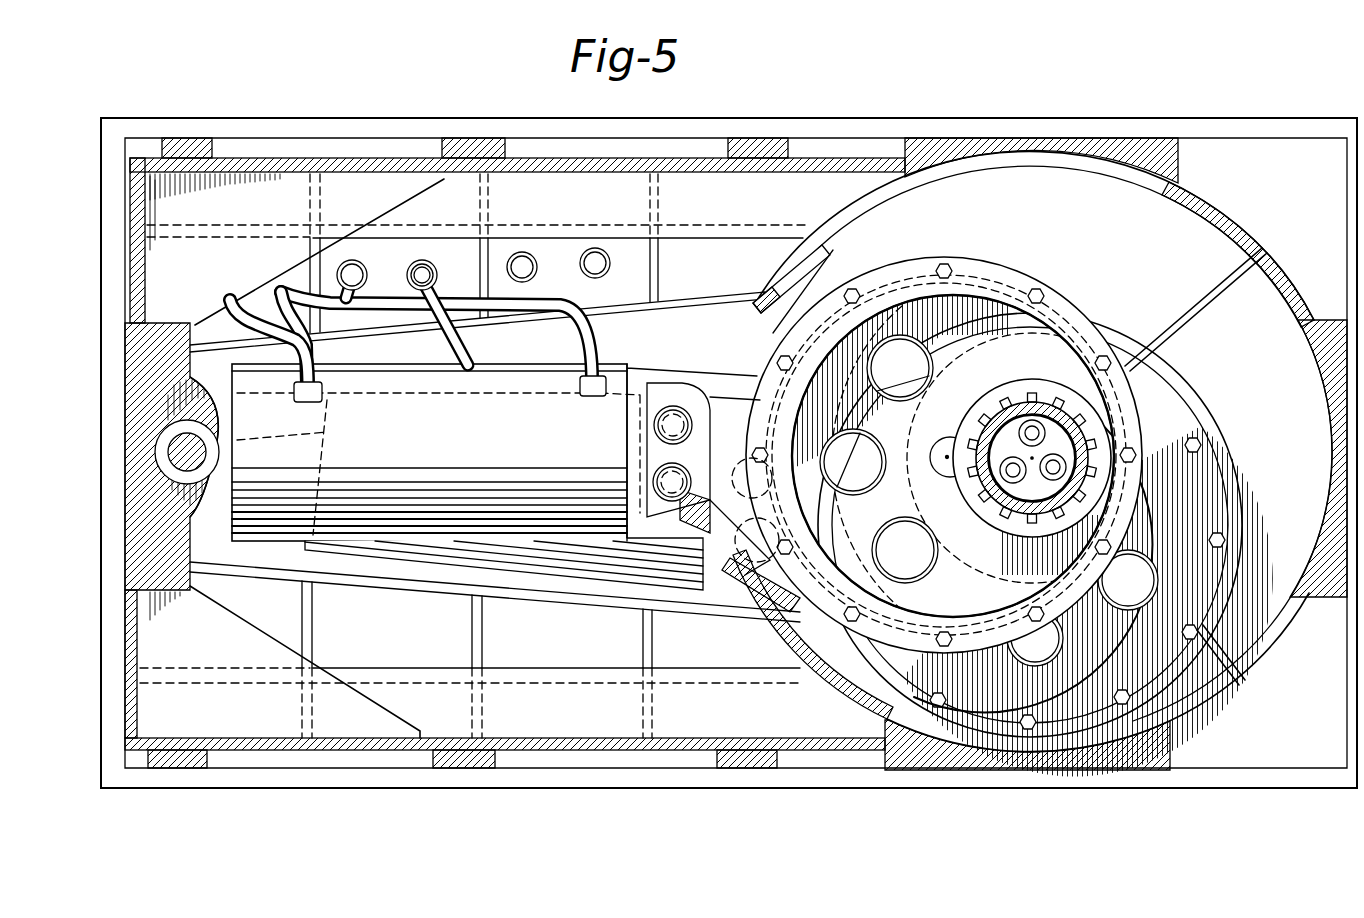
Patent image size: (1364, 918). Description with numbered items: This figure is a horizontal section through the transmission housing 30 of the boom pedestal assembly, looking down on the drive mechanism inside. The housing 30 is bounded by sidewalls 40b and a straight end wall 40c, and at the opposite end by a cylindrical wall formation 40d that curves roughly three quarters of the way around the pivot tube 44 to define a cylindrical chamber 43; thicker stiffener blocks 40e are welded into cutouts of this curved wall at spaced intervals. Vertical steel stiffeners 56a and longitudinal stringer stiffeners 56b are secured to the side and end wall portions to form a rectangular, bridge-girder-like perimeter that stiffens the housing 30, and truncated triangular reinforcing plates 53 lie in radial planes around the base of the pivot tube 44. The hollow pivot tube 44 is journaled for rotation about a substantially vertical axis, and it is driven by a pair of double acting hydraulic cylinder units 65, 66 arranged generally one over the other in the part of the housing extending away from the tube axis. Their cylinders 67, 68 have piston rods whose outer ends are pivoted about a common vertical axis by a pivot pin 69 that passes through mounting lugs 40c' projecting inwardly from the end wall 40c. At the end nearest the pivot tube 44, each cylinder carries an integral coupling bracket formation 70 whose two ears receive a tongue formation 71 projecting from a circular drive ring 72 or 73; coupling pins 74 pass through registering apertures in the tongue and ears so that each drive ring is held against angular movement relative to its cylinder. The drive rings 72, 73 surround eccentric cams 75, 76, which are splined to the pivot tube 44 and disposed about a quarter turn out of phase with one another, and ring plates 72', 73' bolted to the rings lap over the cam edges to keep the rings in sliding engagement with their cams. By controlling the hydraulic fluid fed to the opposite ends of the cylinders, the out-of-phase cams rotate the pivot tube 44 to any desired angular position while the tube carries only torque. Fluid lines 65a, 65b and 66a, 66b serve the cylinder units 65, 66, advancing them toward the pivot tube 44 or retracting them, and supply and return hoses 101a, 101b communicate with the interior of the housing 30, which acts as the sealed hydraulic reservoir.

The transmission housing 30 is at (400, 103).
The sidewalls 40b is at (680, 160).
The straight end wall 40c is at (112, 415).
The mounting lugs 40c' is at (178, 456).
The cylindrical wall formation 40d is at (1258, 694).
The stiffener blocks 40e is at (1160, 140).
The cylindrical chamber 43 is at (1202, 237).
The pivot tube 44 is at (1040, 400).
The reinforcing plates 53 is at (1205, 282).
The vertical steel stiffeners 56a is at (185, 150).
The longitudinal stringer stiffeners 56b is at (858, 125).
The hydraulic cylinder unit 65 is at (382, 366).
The hydraulic fluid line 65a is at (226, 298).
The hydraulic fluid line 65b is at (280, 284).
The hydraulic cylinder unit 66 is at (300, 558).
The hydraulic fluid line 66a is at (370, 260).
The hydraulic fluid line 66b is at (450, 260).
The cylinder 67 is at (500, 366).
The cylinder 68 is at (495, 585).
The pivot pin 69 is at (187, 418).
The coupling bracket formation 70 is at (660, 384).
The tongue formation 71 is at (690, 390).
The circular drive ring 72 is at (944, 443).
The ring plate 72' is at (766, 403).
The circular drive ring 73 is at (1051, 545).
The ring plate 73' is at (1051, 528).
The coupling pins 74 is at (656, 482).
The eccentric cam 75 is at (905, 314).
The eccentric cam 76 is at (1176, 560).
The hydraulic fluid supply hose 101a is at (526, 252).
The hydraulic fluid return hose 101b is at (600, 248).